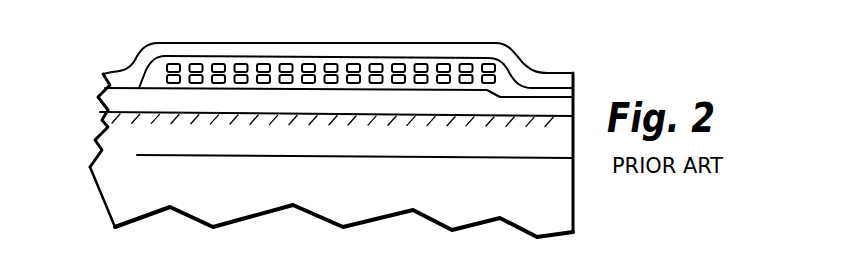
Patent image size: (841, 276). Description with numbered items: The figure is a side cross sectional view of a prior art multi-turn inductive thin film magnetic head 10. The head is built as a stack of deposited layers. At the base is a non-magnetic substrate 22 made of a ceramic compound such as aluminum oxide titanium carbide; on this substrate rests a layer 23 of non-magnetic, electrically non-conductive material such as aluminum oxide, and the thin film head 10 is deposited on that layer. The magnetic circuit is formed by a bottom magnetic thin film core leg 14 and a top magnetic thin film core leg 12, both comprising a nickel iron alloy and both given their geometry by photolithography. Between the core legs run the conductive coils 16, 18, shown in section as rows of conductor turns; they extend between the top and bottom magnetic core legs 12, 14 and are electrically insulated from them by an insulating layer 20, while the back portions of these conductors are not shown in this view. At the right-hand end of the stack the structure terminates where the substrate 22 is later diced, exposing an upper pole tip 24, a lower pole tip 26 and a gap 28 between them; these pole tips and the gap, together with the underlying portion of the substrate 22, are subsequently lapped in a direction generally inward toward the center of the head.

The thin film head 10 is at (530, 29).
The top magnetic thin film core leg 12 is at (487, 50).
The bottom magnetic thin film core leg 14 is at (143, 98).
The conductive coil 16 is at (354, 63).
The conductive coil 18 is at (422, 63).
The insulating layer 20 is at (284, 63).
The substrate 22 is at (115, 173).
The layer of non-magnetic, electrically non-conductive material 23 is at (98, 122).
The upper pole tip 24 is at (528, 63).
The lower pole tip 26 is at (525, 107).
The gap 28 is at (563, 94).